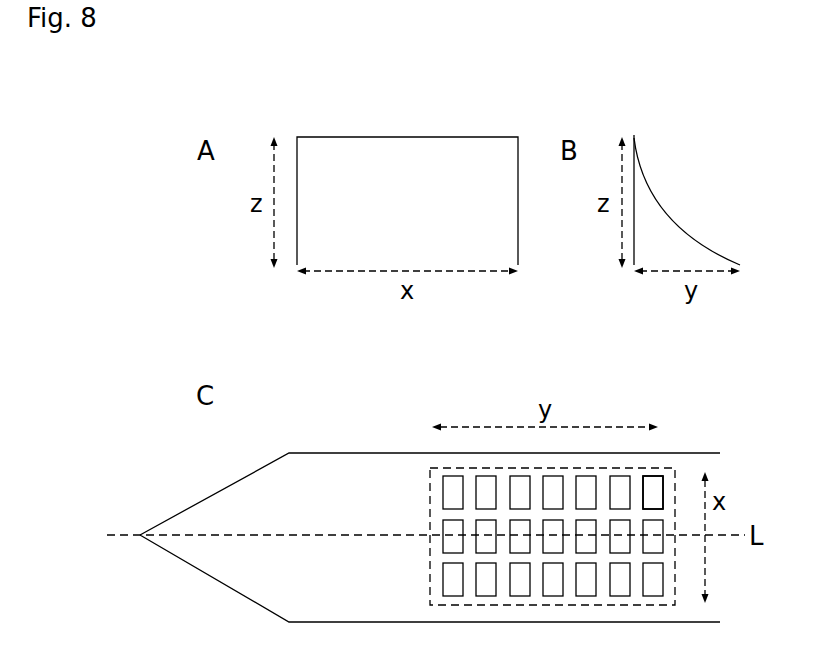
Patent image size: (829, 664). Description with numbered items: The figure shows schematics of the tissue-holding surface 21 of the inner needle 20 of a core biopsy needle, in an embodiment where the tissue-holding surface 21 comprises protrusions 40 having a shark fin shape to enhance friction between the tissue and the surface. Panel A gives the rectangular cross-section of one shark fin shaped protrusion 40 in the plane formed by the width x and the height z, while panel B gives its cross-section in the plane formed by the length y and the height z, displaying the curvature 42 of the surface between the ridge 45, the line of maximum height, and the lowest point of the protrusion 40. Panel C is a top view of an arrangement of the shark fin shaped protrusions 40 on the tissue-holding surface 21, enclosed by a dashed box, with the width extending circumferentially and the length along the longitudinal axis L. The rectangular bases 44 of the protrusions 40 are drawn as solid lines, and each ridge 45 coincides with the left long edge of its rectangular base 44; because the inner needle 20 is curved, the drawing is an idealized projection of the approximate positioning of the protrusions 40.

The inner needle 20 is at (378, 460).
The tissue-holding surface 21 is at (435, 485).
The protrusion 40 is at (647, 475).
The curvature 42 is at (667, 208).
The rectangular base 44 is at (656, 476).
The ridge 45 is at (407, 137).